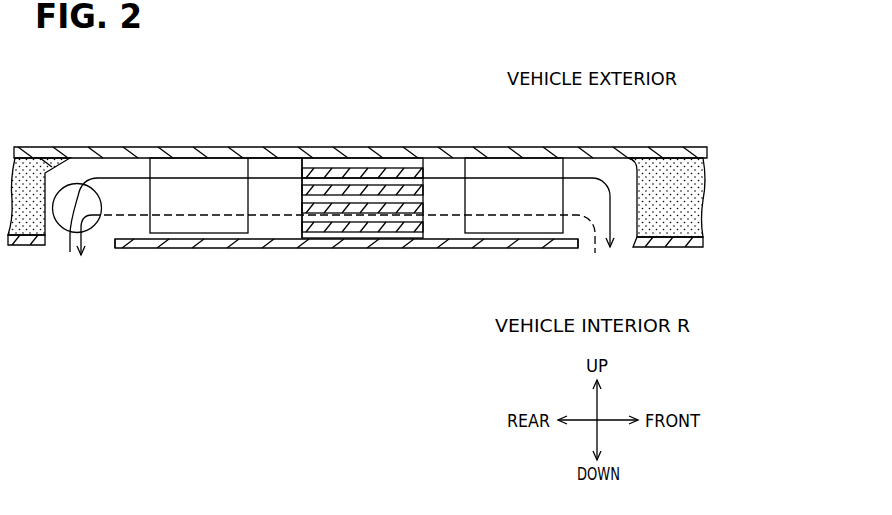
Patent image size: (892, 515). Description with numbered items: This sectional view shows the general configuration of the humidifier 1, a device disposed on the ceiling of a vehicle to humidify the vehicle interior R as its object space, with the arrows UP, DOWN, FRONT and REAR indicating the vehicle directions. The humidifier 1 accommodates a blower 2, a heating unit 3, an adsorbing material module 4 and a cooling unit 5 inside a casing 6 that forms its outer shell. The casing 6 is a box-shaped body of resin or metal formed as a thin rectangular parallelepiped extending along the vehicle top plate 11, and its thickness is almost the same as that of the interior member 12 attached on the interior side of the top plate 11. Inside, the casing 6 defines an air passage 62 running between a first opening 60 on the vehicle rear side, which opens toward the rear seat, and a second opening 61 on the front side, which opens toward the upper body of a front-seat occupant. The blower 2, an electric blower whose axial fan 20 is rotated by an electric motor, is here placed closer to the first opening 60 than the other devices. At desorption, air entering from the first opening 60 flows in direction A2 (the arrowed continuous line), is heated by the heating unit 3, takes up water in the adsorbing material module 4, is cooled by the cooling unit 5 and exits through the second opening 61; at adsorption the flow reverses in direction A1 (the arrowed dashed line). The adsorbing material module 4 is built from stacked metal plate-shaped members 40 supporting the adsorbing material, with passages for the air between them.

The humidifier 1 is at (387, 258).
The blower 2 is at (69, 181).
The axial fan 20 is at (110, 178).
The heating unit 3 is at (187, 170).
The adsorbing material module 4 is at (385, 167).
The plate-shaped member 40 is at (423, 189).
The cooling unit 5 is at (503, 170).
The casing 6 is at (40, 160).
The first opening 60 is at (115, 243).
The second opening 61 is at (583, 247).
The air passage 62 is at (272, 163).
The vehicle top plate 11 is at (303, 160).
The interior member 12 is at (25, 240).
The direction of air flow at adsorption A1 is at (178, 217).
The direction of air flow at desorption A2 is at (580, 180).